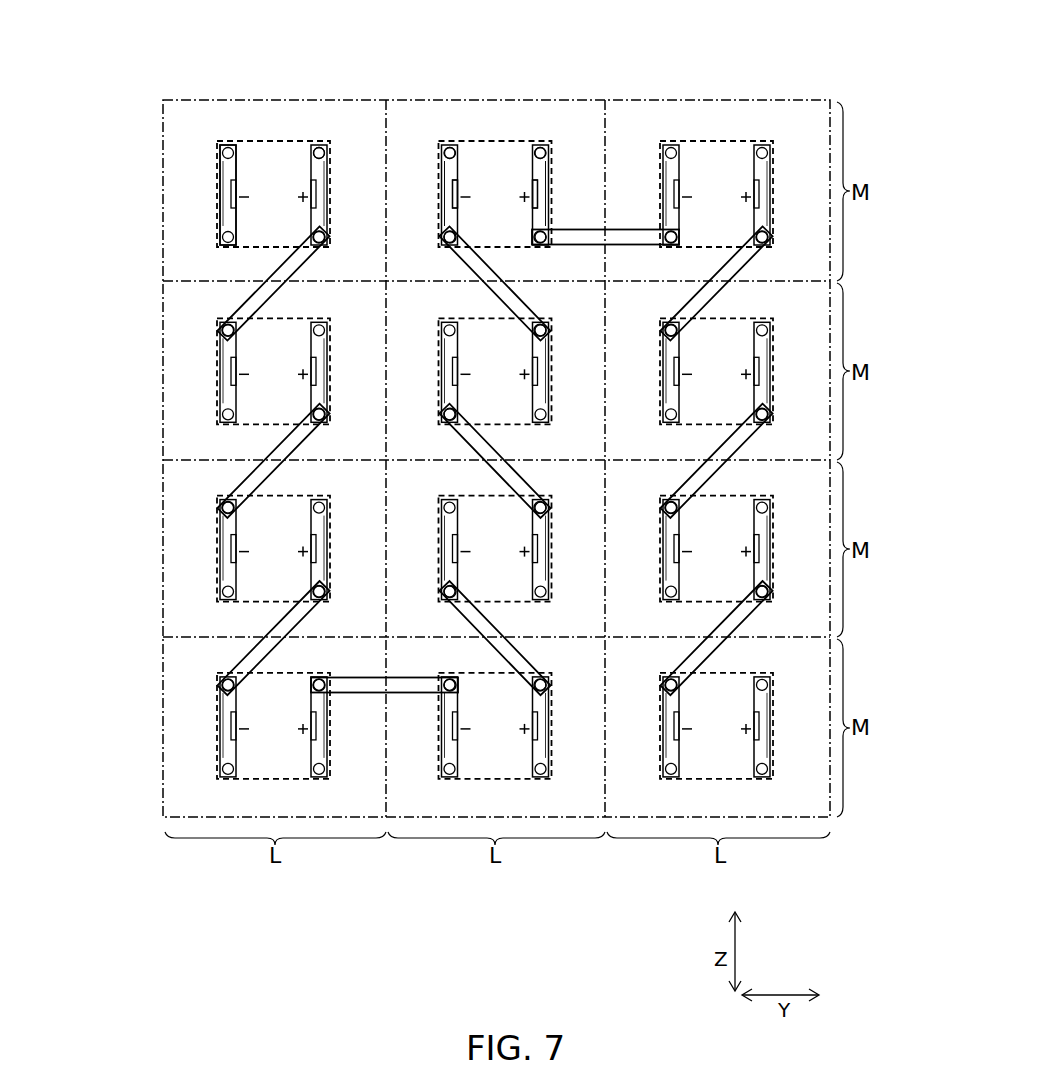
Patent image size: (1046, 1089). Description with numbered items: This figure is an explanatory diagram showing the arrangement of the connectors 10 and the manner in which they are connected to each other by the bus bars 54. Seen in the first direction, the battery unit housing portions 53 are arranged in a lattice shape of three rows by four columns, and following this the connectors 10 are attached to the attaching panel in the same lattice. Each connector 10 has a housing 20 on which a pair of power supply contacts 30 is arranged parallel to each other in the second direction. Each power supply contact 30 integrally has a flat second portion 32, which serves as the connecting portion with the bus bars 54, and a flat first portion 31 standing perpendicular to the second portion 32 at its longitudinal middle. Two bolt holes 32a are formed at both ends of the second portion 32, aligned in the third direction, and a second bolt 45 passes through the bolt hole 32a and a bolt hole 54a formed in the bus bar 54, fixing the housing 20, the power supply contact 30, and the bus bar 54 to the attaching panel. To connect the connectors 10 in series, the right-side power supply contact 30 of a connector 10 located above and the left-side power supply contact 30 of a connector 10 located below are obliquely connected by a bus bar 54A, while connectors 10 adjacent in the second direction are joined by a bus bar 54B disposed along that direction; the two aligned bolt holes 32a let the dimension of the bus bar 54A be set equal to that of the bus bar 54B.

The connector 10 is at (208, 220).
The housing 20 is at (240, 146).
The power supply contact 30 is at (216, 175).
The first portion 31 is at (452, 193).
The second portion 32 is at (447, 165).
The bolt hole 32a is at (450, 150).
The second bolt 45 is at (445, 241).
The battery unit housing portion 53 is at (352, 140).
The bus bar 54 is at (408, 456).
The bus bar for connection in the third direction 54A is at (258, 292).
The bus bar for connection in the second direction 54B is at (636, 228).
The bolt hole 54a is at (313, 150).